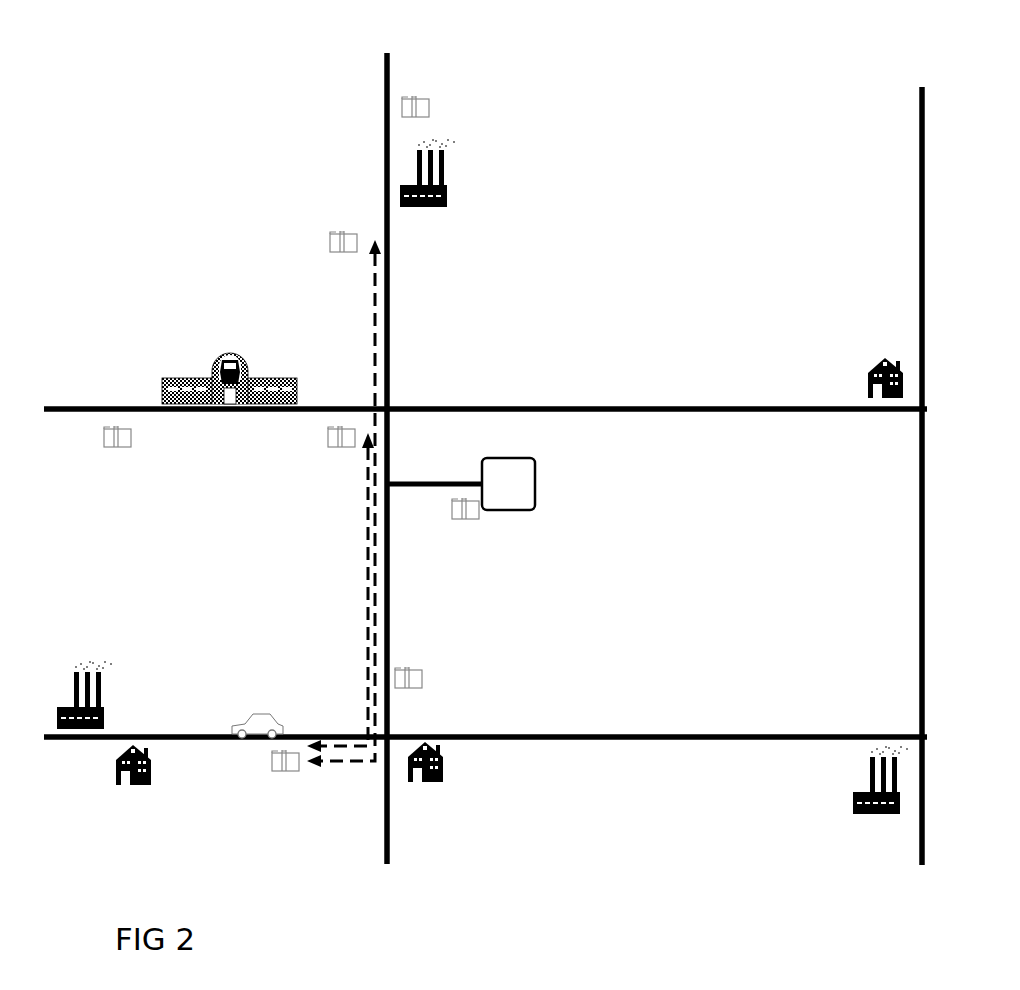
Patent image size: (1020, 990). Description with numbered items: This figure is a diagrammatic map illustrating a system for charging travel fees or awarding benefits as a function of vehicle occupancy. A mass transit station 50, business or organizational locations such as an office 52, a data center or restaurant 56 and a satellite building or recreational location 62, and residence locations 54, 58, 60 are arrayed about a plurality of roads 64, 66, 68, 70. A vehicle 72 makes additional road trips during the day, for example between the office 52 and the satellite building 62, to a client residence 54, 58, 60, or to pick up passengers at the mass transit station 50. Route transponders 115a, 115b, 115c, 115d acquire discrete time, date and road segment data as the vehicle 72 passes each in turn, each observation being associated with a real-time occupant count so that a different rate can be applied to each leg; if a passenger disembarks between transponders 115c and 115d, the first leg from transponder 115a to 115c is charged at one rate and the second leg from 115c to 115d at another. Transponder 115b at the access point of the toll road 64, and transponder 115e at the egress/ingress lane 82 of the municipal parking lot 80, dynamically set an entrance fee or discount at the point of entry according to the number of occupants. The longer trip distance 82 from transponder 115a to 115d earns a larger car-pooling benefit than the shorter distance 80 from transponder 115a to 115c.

The mass transit station 50 is at (178, 378).
The office 52 is at (80, 672).
The residence location 54 is at (120, 784).
The data center 56 is at (865, 812).
The residence location 58 is at (443, 778).
The residence location 60 is at (870, 372).
The satellite building 62 is at (447, 200).
The toll road 64 is at (385, 103).
The road 66 is at (920, 147).
The road 68 is at (820, 410).
The road 70 is at (670, 740).
The vehicle 72 is at (255, 712).
The municipal parking lot 80 is at (537, 480).
The egress/ingress lane 82 is at (373, 330).
The route transponder 115a is at (290, 770).
The toll road entrance transponder 115b is at (418, 685).
The route transponder 115c is at (335, 447).
The route transponder 115d is at (332, 238).
The parking lot lane transponder 115e is at (468, 520).